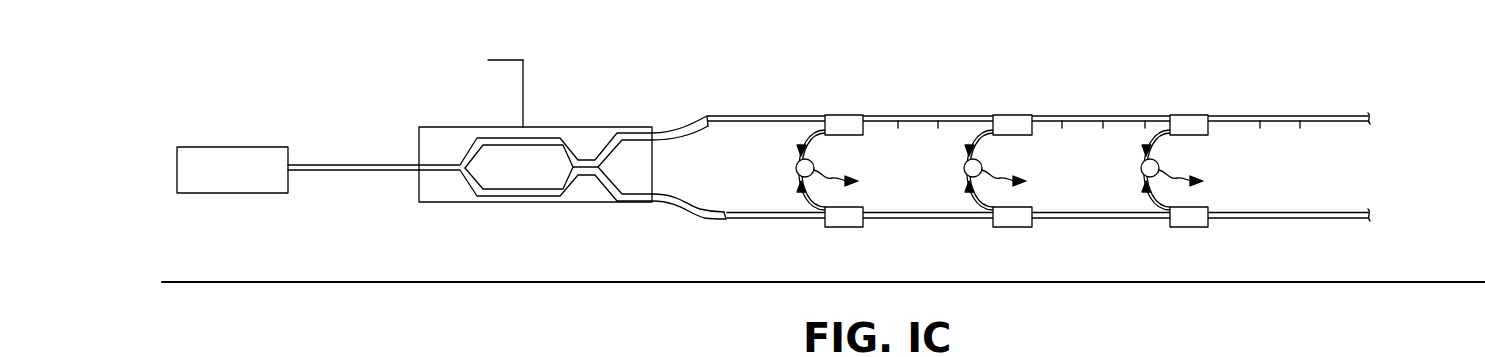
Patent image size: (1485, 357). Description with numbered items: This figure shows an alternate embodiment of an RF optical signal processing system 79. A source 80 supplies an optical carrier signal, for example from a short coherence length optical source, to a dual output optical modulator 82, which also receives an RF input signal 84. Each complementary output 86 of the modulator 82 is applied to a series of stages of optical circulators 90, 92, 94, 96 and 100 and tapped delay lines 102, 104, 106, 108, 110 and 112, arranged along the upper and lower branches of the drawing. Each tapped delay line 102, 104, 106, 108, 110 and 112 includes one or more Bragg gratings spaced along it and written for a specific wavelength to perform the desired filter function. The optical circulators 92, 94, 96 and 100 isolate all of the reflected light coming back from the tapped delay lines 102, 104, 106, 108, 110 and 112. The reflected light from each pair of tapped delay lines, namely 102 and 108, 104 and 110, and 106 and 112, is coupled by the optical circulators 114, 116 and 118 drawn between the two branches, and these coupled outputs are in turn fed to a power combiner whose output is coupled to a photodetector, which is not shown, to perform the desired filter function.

The optical communication system 79 is at (1410, 104).
The source 80 is at (235, 147).
The dual output optical modulator 82 is at (565, 127).
The RF input signal 84 is at (503, 59).
The complementary output 86 is at (719, 113).
The optical circulator 90 is at (843, 114).
The optical circulator 92 is at (1012, 114).
The optical circulator 94 is at (1190, 114).
The optical circulator 96 is at (837, 229).
The optical circulator 100 is at (1192, 229).
The tapped delay line 102 is at (921, 123).
The tapped delay line 104 is at (1071, 127).
The tapped delay line 106 is at (1280, 123).
The tapped delay line 108 is at (930, 212).
The tapped delay line 110 is at (1057, 212).
The tapped delay line 112 is at (1237, 212).
The optical circulator 114 is at (796, 168).
The optical circulator 116 is at (964, 168).
The optical circulator 118 is at (1160, 165).